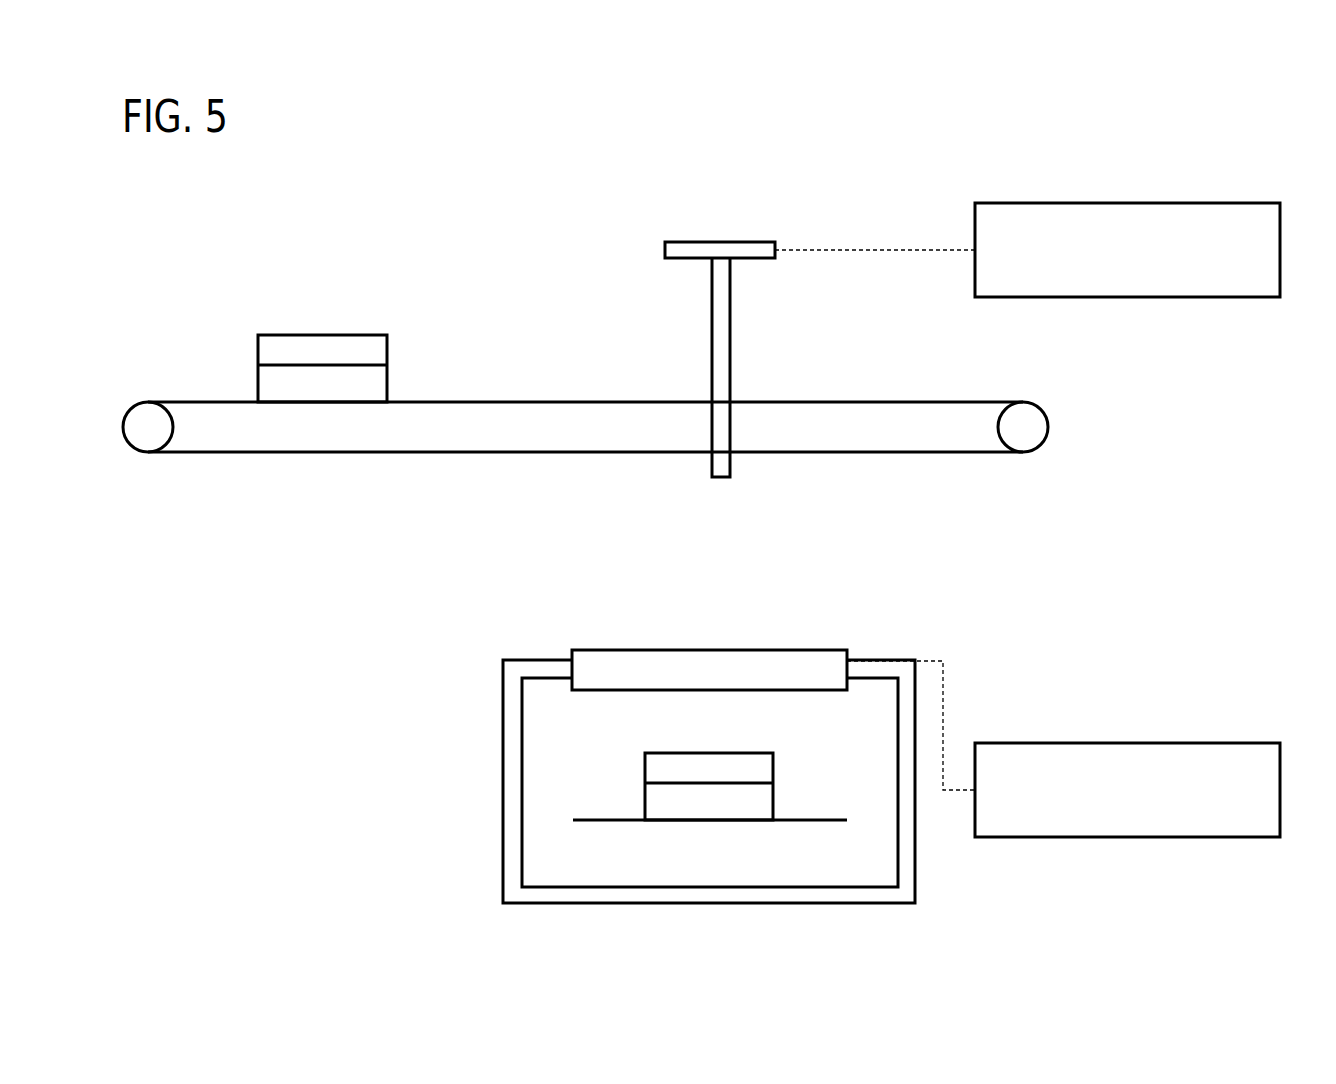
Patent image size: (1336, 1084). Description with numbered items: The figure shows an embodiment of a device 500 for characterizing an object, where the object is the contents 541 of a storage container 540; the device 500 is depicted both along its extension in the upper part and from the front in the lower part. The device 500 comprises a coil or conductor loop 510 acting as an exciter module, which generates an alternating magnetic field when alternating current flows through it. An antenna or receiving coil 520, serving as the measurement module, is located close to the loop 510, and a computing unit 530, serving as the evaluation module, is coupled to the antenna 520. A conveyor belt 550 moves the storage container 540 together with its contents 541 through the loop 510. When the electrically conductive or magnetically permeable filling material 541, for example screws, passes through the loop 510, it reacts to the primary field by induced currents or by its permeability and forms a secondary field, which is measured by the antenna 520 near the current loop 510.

The device for characterizing an object 500 is at (208, 808).
The conductor loop 510 is at (910, 517).
The antenna 520 is at (579, 199).
The computing unit 530 is at (1125, 203).
The storage container 540 is at (388, 345).
The contents 541 is at (258, 385).
The conveyor belt 550 is at (228, 502).